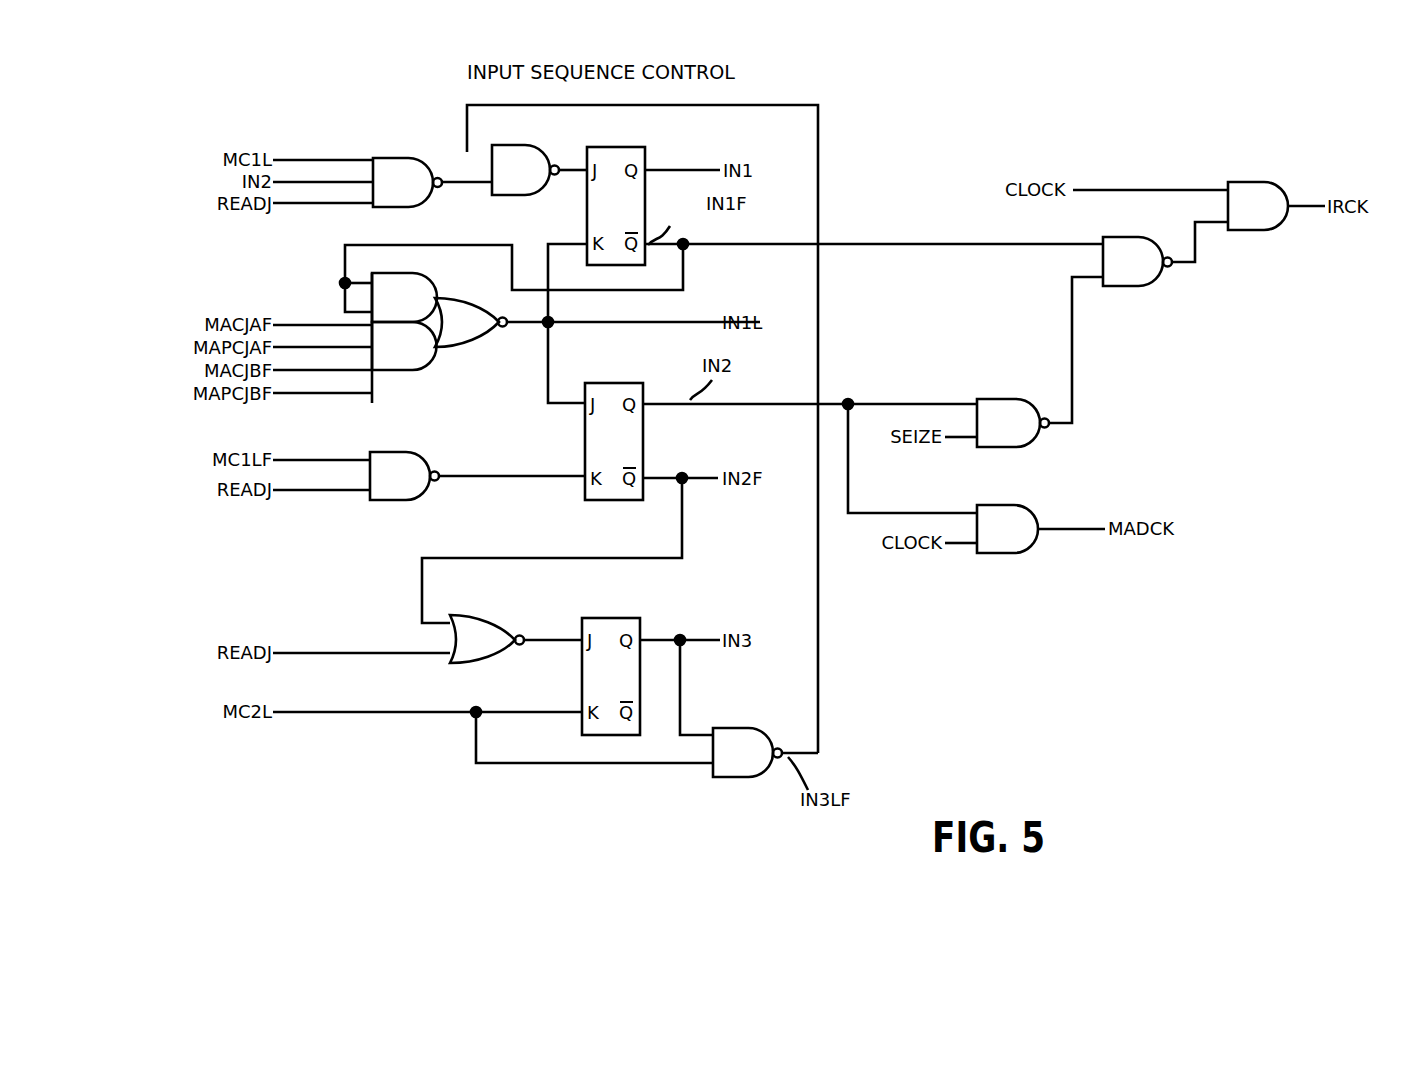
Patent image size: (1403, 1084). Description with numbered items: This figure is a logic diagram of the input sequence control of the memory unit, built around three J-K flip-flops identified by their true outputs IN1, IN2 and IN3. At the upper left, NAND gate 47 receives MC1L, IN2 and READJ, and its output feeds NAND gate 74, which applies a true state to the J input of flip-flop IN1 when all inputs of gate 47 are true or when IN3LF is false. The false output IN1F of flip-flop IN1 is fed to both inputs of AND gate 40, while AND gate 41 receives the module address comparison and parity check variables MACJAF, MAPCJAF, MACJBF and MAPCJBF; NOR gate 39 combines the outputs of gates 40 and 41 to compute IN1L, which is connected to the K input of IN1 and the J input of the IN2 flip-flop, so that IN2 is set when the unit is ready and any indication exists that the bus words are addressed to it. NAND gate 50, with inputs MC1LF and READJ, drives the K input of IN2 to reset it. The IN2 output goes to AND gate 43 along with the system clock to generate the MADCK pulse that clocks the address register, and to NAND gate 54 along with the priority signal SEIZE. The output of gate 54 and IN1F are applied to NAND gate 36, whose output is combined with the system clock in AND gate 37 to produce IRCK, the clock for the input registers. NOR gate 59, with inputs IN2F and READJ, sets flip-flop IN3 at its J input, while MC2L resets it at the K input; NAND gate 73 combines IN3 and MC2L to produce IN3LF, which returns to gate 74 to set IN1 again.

The NAND gate 47 is at (411, 158).
The NAND gate 74 is at (536, 147).
The AND gate 40 is at (424, 277).
The AND gate 41 is at (407, 370).
The NOR gate 39 is at (470, 346).
The NAND gate 50 is at (400, 500).
The NOR gate 59 is at (498, 617).
The NAND gate 73 is at (735, 728).
The NAND gate 54 is at (1005, 399).
The AND gate 43 is at (1020, 505).
The NAND gate 36 is at (1133, 286).
The AND gate 37 is at (1255, 182).